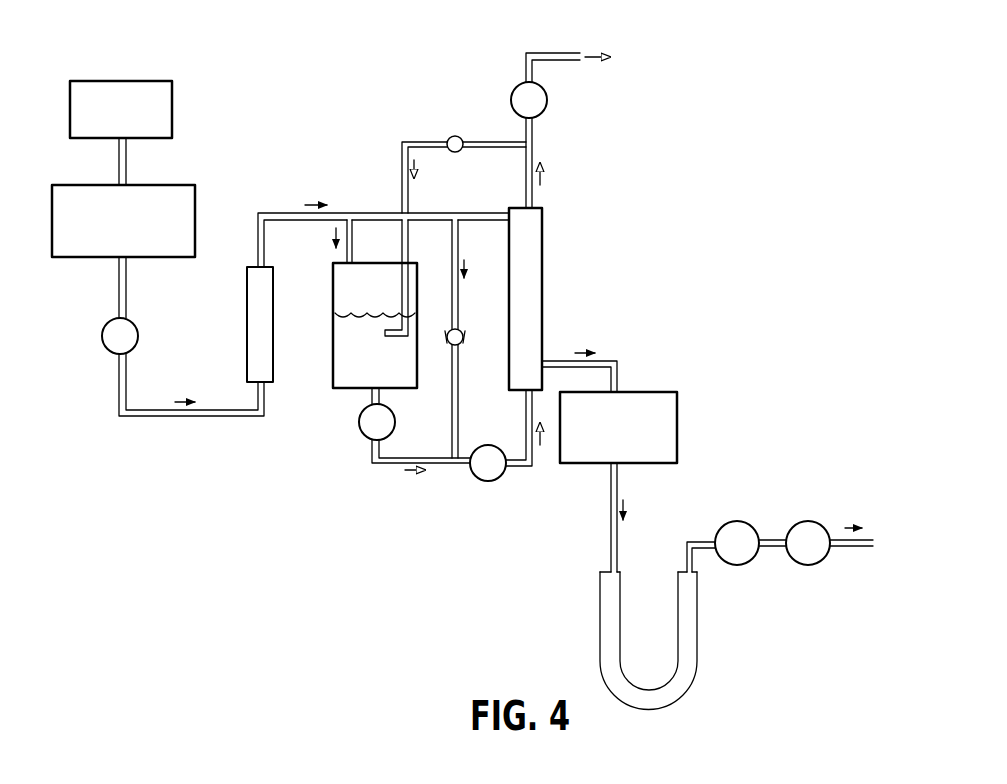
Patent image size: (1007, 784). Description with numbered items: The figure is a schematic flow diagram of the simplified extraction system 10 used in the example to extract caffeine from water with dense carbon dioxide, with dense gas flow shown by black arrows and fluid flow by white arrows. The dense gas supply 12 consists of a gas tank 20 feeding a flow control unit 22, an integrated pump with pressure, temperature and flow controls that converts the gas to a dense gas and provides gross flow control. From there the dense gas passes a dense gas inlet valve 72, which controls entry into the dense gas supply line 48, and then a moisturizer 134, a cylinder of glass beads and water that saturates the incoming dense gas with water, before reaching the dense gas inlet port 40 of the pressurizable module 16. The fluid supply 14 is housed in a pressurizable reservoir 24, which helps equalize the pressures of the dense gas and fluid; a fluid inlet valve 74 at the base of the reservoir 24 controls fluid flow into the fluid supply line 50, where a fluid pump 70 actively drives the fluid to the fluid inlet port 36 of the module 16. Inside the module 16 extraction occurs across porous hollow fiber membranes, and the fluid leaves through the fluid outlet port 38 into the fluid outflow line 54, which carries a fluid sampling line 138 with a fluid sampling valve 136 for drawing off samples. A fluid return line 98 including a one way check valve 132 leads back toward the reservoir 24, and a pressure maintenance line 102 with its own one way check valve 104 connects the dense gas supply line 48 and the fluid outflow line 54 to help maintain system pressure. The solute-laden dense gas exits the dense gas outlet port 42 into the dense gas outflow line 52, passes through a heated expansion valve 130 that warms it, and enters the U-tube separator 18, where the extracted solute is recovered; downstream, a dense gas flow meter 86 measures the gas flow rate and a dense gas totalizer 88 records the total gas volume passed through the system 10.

The system 10 is at (688, 42).
The dense gas supply 12 is at (230, 104).
The fluid supply 14 is at (348, 330).
The pressurizable module 16 is at (545, 265).
The U-tube separator 18 is at (682, 700).
The gas tank 20 is at (173, 100).
The flow control unit 22 is at (180, 185).
The pressurizable reservoir 24 is at (343, 390).
The fluid inlet port 36 is at (522, 410).
The fluid outlet port 38 is at (535, 207).
The dense gas inlet port 40 is at (507, 213).
The dense gas outlet port 42 is at (550, 360).
The dense gas supply line 48 is at (178, 418).
The fluid supply line 50 is at (392, 465).
The dense gas outflow line 52 is at (612, 360).
The fluid outflow line 54 is at (534, 160).
The fluid pump 70 is at (502, 479).
The dense gas inlet valve 72 is at (137, 325).
The fluid inlet valve 74 is at (367, 432).
The dense gas flow meter 86 is at (740, 522).
The dense gas totalizer 88 is at (806, 522).
The fluid return line 98 is at (402, 168).
The pressure maintenance line 102 is at (450, 418).
The one way check valve 104 is at (480, 340).
The heated expansion valve 130 is at (645, 392).
The one way check valve 132 is at (448, 140).
The moisturizer 134 is at (248, 357).
The fluid sampling valve 136 is at (548, 100).
The fluid sampling line 138 is at (555, 53).